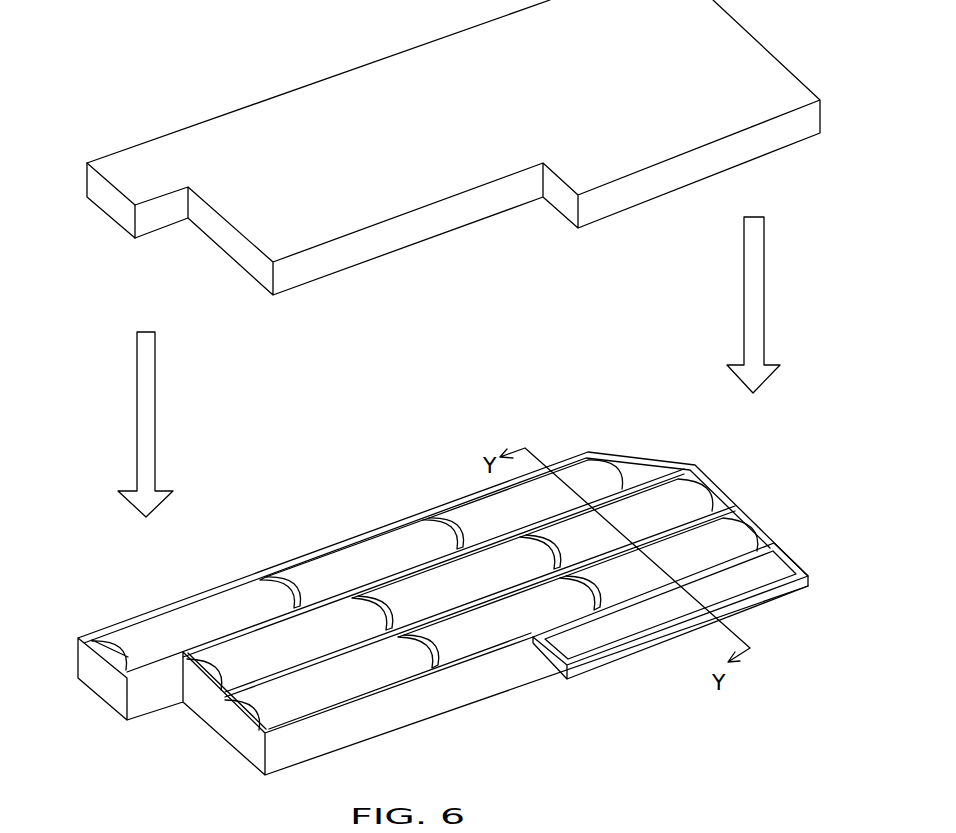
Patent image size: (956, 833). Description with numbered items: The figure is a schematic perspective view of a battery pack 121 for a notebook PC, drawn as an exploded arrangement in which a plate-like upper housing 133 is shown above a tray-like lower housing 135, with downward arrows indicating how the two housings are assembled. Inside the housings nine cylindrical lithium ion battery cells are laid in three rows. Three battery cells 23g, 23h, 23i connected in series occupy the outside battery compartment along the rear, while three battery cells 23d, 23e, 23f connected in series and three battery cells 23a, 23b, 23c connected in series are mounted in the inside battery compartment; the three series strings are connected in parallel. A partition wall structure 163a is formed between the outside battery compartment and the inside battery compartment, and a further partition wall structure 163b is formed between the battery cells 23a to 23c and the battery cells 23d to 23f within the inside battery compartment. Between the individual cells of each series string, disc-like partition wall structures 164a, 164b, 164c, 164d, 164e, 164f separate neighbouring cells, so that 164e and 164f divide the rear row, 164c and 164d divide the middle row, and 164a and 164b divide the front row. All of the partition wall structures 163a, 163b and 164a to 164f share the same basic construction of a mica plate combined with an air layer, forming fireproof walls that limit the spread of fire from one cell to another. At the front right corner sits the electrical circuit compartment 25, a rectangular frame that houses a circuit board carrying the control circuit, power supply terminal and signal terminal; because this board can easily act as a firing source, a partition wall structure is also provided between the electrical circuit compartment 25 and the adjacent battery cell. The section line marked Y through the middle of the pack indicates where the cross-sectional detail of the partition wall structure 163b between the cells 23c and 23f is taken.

The battery pack 121 is at (445, 147).
The lower housing 135 is at (103, 188).
The upper housing 133 is at (103, 628).
The electrical circuit compartment 25 is at (635, 632).
The partition wall structure 163a is at (400, 573).
The partition wall structure 163b is at (290, 670).
The partition wall structure 164a is at (410, 653).
The partition wall structure 164b is at (573, 586).
The partition wall structure 164c is at (357, 602).
The partition wall structure 164d is at (526, 559).
The partition wall structure 164e is at (268, 572).
The partition wall structure 164f is at (437, 510).
The battery cell 23a is at (315, 701).
The battery cell 23b is at (477, 643).
The battery cell 23c is at (645, 581).
The battery cell 23d is at (258, 673).
The battery cell 23e is at (440, 606).
The battery cell 23f is at (598, 548).
The battery cell 23g is at (172, 651).
The battery cell 23h is at (350, 587).
The battery cell 23i is at (537, 515).